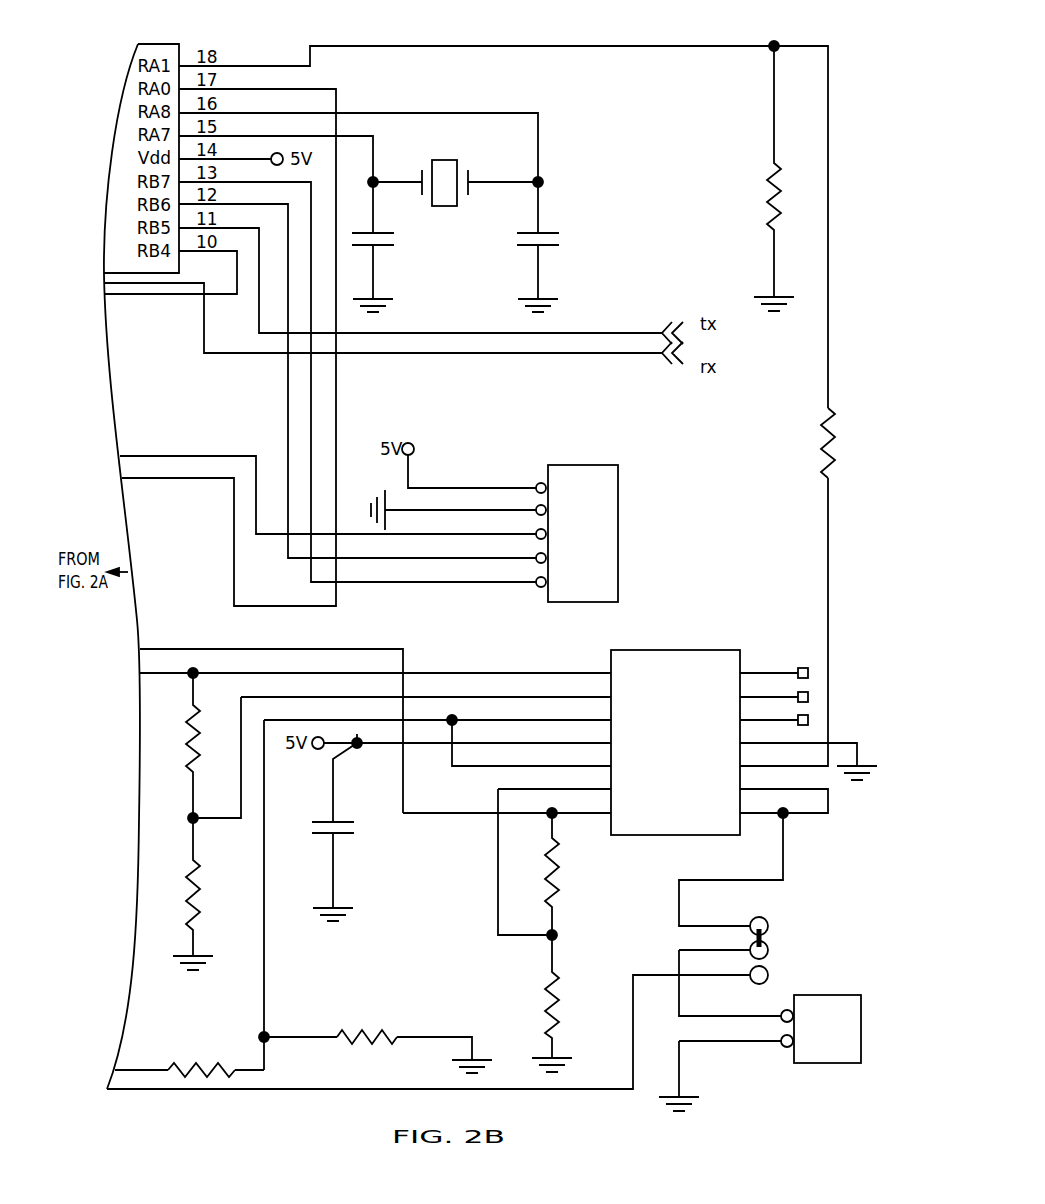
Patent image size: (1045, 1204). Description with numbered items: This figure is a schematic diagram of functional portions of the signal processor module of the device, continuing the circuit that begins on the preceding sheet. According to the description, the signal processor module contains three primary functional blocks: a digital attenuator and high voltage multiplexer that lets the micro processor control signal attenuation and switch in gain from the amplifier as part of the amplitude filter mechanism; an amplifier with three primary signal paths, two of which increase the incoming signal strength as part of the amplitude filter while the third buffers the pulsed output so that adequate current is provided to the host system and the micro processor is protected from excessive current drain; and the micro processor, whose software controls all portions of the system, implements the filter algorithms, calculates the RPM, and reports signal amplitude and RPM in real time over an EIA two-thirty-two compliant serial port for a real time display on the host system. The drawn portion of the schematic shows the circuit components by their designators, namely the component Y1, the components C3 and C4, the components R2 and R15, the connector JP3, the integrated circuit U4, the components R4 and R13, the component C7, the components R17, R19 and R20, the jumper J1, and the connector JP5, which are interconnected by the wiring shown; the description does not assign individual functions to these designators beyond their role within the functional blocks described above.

The crystal 16.384 MHz HCM49 Y1 is at (527, 173).
The 18pF ceramic capacitor C3 is at (416, 307).
The 18pF ceramic capacitor C4 is at (610, 247).
The 10k resistor R2 is at (760, 178).
The 1k resistor R15 is at (491, 727).
The ICSP header (DNP) JP3 is at (577, 537).
The quad comparator / op-amp U4 is at (680, 732).
The 15k resistor R4 is at (177, 748).
The 4k resistor R13 is at (184, 894).
The 0.1uF capacitor C7 is at (379, 853).
The 10k resistor R17 is at (367, 989).
The 15k resistor R19 is at (533, 876).
The 4k resistor R20 is at (538, 1003).
The jumper (DNP) J1 is at (774, 943).
The RA BNC jack with posts JP5 is at (803, 1044).